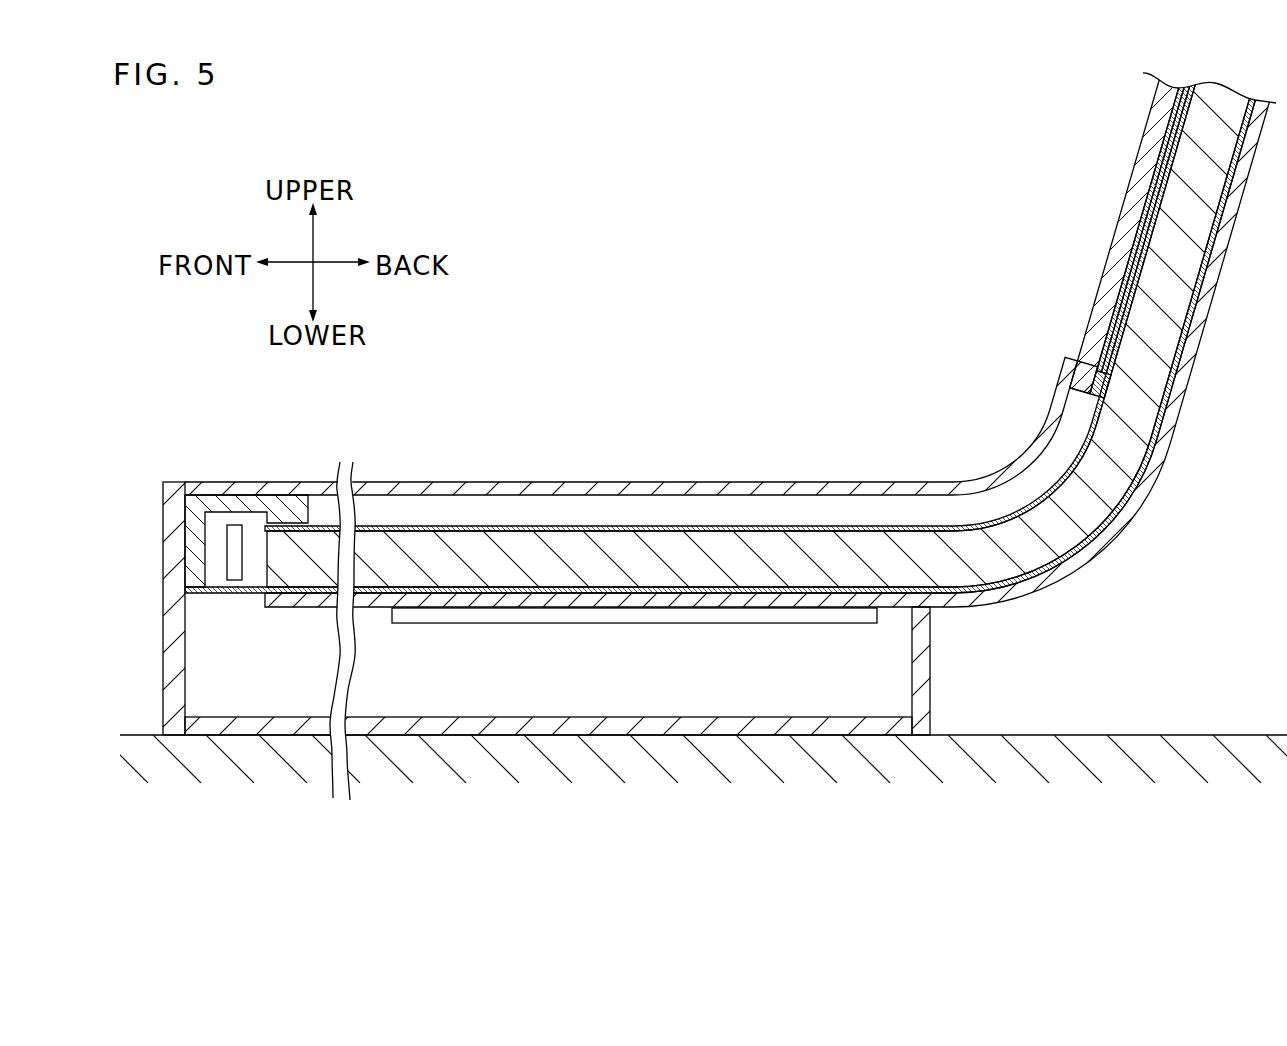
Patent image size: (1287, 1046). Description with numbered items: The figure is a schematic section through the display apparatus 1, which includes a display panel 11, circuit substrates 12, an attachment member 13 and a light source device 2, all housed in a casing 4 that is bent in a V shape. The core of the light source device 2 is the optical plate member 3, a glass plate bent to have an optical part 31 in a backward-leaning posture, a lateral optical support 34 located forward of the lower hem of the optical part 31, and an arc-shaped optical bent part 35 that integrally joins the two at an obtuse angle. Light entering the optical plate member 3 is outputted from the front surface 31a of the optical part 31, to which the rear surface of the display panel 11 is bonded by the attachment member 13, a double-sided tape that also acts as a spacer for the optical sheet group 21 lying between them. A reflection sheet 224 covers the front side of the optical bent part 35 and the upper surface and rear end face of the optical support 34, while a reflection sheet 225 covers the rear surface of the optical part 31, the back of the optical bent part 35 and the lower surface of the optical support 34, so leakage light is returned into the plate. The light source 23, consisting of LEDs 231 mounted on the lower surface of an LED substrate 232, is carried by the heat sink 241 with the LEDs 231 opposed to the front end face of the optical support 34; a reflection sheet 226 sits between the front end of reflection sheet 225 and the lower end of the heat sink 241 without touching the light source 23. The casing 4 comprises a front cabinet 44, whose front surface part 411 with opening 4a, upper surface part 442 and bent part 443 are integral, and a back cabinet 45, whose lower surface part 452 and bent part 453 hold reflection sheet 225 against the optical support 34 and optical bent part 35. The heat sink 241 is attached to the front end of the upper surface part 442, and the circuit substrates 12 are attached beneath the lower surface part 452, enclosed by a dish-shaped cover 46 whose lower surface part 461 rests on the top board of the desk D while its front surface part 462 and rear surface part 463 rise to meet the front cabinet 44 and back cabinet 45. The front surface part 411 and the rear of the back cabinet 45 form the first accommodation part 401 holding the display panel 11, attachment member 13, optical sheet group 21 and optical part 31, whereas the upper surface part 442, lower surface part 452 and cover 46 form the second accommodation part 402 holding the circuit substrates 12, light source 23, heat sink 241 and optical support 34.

The display apparatus 1 is at (528, 254).
The display panel 11 is at (1118, 242).
The circuit substrate 12 is at (627, 615).
The attachment member 13 is at (1110, 388).
The light source device 2 is at (911, 472).
The optical sheet group 21 is at (1135, 183).
The reflection sheet 224 is at (648, 525).
The reflection sheet 225 is at (1162, 430).
The reflection sheet 226 is at (248, 597).
The light source 23 is at (250, 827).
The LED 231 is at (233, 575).
The LED substrate 232 is at (215, 517).
The heat sink 241 is at (228, 503).
The optical plate member 3 is at (1156, 353).
The optical part 31 is at (1185, 290).
The front surface 31a is at (1160, 128).
The optical support 34 is at (768, 560).
The optical bent part 35 is at (1075, 523).
The casing 4 is at (1076, 645).
The opening 4a is at (1070, 352).
The first accommodation part 401 is at (1048, 157).
The second accommodation part 402 is at (712, 455).
The front surface part 411 is at (1068, 367).
The front cabinet 44 is at (967, 496).
The upper surface part 442 is at (562, 490).
The bent part 443 is at (1007, 470).
The back cabinet 45 is at (1029, 594).
The lower surface part 452 is at (768, 607).
The bent part 453 is at (1090, 545).
The cover 46 is at (936, 687).
The lower surface part 461 is at (560, 727).
The front surface part 462 is at (170, 550).
The rear surface part 463 is at (917, 667).
The desk D is at (1185, 735).